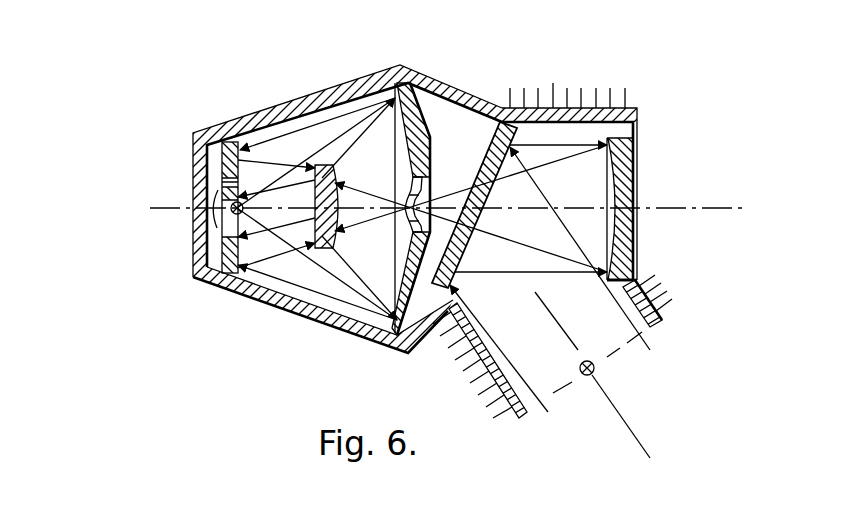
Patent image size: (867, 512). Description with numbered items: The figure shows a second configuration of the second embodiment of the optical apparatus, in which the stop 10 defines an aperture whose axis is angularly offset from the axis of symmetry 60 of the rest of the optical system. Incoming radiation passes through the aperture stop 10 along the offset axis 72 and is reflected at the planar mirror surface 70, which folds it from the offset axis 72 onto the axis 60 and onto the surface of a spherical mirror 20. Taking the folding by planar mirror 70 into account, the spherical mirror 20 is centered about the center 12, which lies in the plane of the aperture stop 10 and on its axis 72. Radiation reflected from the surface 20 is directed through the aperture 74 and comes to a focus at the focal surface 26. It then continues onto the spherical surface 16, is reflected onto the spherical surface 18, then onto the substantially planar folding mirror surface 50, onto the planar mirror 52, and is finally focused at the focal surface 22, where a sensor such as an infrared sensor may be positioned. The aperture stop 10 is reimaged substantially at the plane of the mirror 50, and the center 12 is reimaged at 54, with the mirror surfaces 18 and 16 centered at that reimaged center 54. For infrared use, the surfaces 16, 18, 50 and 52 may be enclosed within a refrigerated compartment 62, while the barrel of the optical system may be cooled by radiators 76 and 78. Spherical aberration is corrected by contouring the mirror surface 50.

The aperture stop 10 is at (675, 308).
The center 12 is at (594, 369).
The spherical surface 16 is at (336, 183).
The spherical surface 18 is at (420, 300).
The spherical mirror 20 is at (612, 193).
The focal surface 22 is at (214, 204).
The focal surface 26 is at (407, 226).
The planar folding mirror surface 50 is at (243, 160).
The planar mirror 52 is at (308, 232).
The reimaged center 54 is at (232, 216).
The axis of symmetry 60 is at (713, 209).
The refrigerated compartment 62 is at (260, 303).
The planar mirror surface 70 is at (463, 257).
The offset axis 72 is at (557, 318).
The aperture 74 is at (432, 186).
The radiator 76 is at (553, 88).
The radiator 78 is at (640, 282).